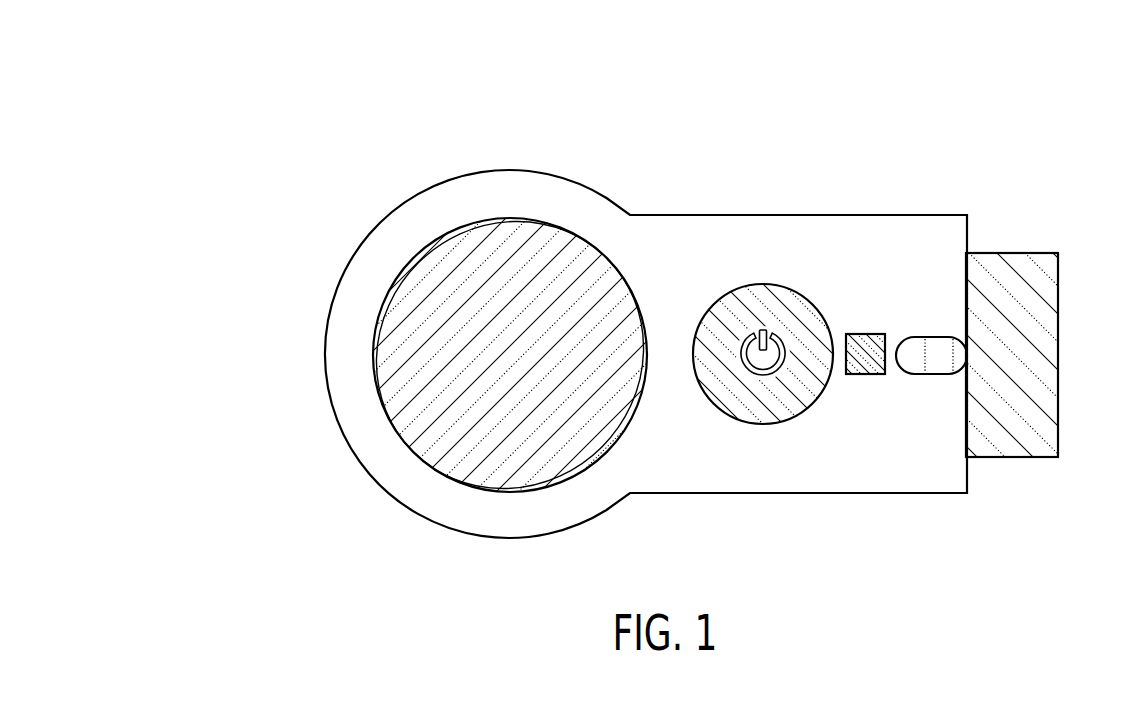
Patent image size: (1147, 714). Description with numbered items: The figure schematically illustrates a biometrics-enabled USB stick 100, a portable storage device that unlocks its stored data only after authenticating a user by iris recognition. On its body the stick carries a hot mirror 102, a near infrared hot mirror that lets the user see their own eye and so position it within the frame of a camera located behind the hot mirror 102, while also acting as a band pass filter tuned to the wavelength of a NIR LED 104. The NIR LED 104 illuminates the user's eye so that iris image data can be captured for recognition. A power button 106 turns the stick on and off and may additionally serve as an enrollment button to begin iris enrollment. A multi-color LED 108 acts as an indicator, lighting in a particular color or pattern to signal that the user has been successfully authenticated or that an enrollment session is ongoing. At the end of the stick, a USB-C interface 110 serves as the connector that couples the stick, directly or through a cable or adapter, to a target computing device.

The biometrics-enabled USB stick 100 is at (270, 119).
The hot mirror 102 is at (476, 228).
The NIR LED 104 is at (866, 333).
The power button 106 is at (763, 284).
The multi-color LED 108 is at (931, 375).
The USB-C interface 110 is at (1058, 358).